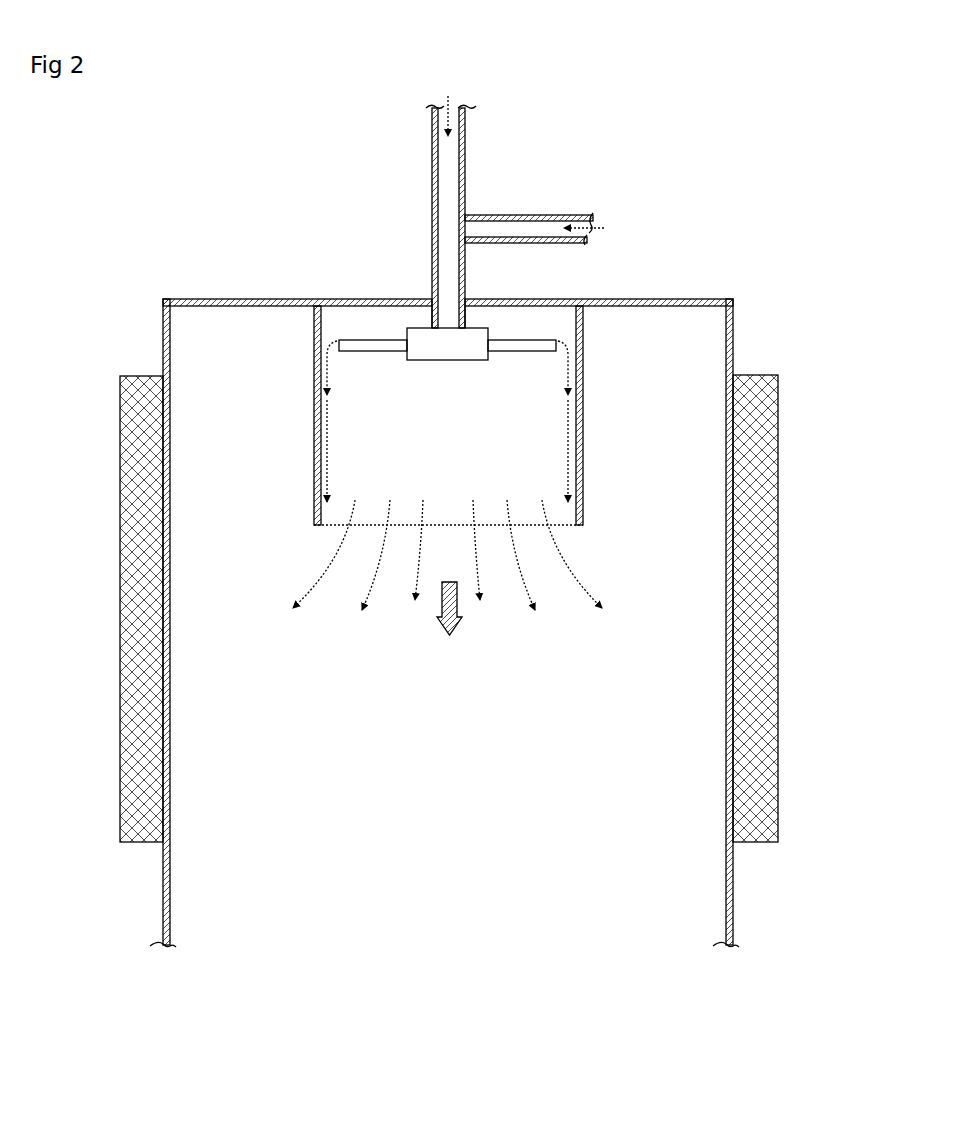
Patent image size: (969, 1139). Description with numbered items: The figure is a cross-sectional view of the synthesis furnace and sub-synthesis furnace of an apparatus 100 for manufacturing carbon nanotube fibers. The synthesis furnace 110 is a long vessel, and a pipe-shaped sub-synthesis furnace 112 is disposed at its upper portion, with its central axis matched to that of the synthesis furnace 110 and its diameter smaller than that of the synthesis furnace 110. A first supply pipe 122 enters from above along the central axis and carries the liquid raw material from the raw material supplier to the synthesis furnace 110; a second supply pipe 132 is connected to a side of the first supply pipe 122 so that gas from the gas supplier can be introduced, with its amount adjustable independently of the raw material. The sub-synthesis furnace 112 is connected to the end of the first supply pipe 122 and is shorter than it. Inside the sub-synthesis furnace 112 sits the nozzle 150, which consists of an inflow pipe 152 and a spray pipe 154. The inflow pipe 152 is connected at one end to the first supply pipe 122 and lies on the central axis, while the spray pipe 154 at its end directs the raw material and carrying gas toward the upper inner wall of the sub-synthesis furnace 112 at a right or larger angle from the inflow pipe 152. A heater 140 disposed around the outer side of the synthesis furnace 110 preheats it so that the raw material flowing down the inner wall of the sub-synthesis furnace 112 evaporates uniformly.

The apparatus for manufacturing carbon nanotube fibers 100 is at (325, 176).
The synthesis furnace 110 is at (683, 298).
The sub-synthesis furnace 112 is at (583, 361).
The first supply pipe 122 is at (465, 138).
The second supply pipe 132 is at (554, 215).
The heater 140 is at (120, 490).
The nozzle 150 is at (470, 318).
The inflow pipe 152 is at (420, 320).
The spray pipe 154 is at (542, 334).